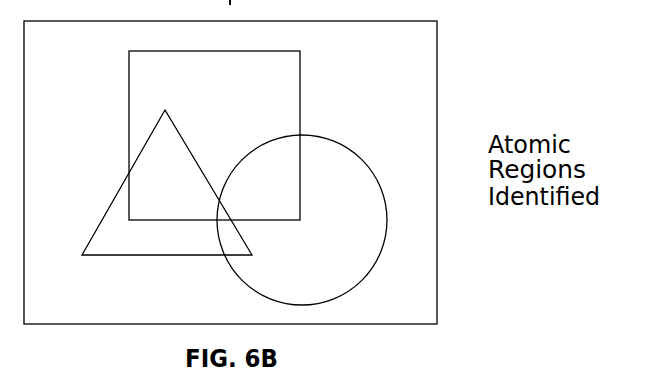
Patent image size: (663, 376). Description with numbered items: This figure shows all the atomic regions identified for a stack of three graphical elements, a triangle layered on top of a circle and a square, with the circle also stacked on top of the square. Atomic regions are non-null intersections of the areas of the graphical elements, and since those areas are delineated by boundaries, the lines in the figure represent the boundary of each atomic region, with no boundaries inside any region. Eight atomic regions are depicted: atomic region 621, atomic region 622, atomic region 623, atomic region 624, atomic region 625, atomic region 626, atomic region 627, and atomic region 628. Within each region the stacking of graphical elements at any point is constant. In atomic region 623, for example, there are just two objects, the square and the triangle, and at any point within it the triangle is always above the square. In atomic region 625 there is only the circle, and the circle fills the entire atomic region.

The atomic region 621 is at (91, 108).
The atomic region 622 is at (234, 106).
The atomic region 623 is at (191, 201).
The atomic region 624 is at (179, 248).
The atomic region 625 is at (352, 200).
The atomic region 626 is at (279, 200).
The atomic region 627 is at (195, 243).
The atomic region 628 is at (232, 271).